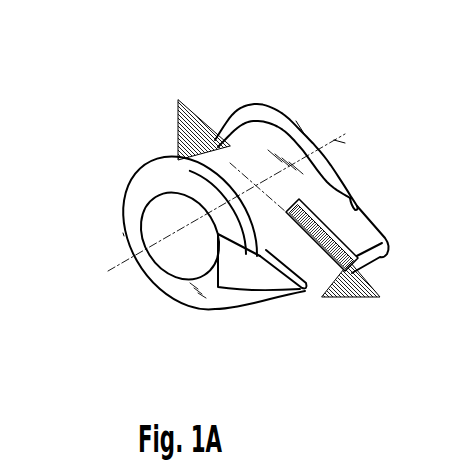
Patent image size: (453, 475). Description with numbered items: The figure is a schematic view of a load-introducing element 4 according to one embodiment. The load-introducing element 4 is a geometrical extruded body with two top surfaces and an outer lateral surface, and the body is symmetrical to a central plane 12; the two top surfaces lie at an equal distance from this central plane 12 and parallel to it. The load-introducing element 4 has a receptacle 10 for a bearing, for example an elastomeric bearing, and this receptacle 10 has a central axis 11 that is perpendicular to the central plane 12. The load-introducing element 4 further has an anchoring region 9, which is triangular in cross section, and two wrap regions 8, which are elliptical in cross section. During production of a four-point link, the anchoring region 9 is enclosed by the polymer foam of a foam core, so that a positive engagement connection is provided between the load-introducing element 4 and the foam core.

The load-introducing element 4 is at (134, 285).
The wrap regions 8 is at (146, 175).
The anchoring region 9 is at (355, 232).
The receptacle 10 is at (172, 240).
The central axis 11 is at (334, 140).
The central plane 12 is at (346, 299).